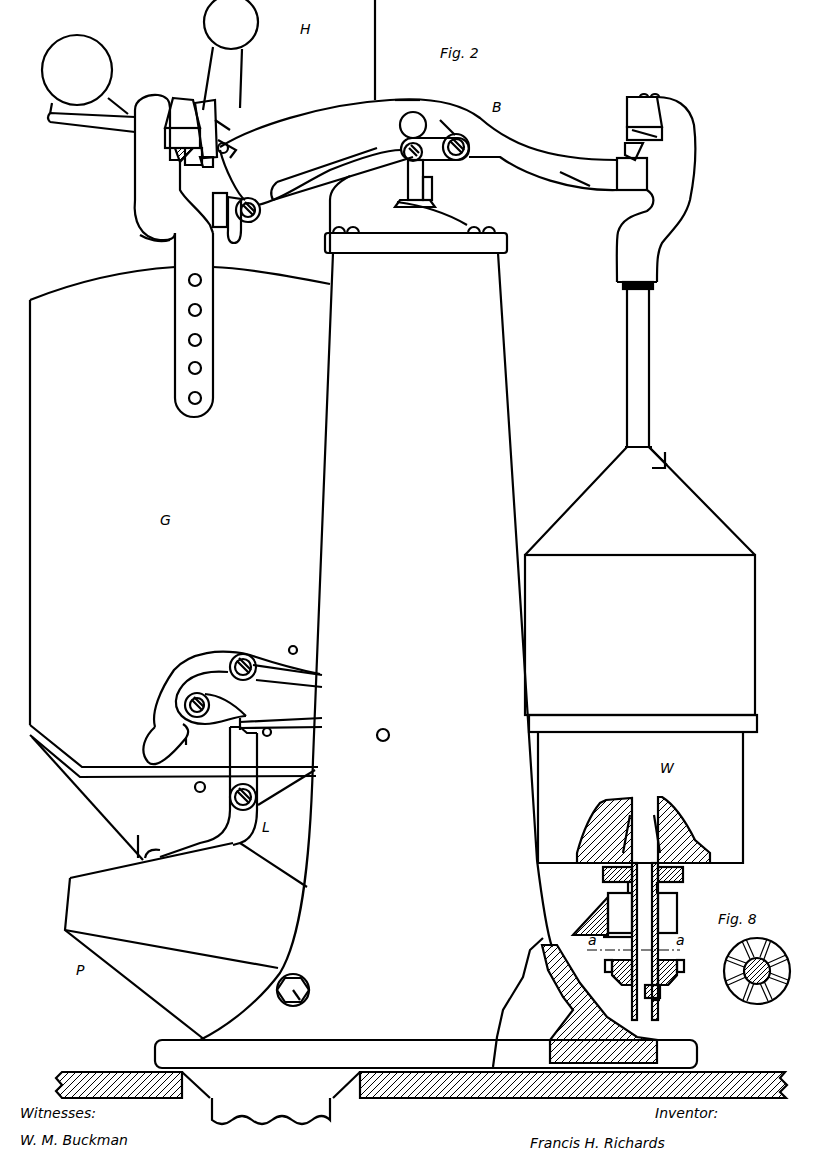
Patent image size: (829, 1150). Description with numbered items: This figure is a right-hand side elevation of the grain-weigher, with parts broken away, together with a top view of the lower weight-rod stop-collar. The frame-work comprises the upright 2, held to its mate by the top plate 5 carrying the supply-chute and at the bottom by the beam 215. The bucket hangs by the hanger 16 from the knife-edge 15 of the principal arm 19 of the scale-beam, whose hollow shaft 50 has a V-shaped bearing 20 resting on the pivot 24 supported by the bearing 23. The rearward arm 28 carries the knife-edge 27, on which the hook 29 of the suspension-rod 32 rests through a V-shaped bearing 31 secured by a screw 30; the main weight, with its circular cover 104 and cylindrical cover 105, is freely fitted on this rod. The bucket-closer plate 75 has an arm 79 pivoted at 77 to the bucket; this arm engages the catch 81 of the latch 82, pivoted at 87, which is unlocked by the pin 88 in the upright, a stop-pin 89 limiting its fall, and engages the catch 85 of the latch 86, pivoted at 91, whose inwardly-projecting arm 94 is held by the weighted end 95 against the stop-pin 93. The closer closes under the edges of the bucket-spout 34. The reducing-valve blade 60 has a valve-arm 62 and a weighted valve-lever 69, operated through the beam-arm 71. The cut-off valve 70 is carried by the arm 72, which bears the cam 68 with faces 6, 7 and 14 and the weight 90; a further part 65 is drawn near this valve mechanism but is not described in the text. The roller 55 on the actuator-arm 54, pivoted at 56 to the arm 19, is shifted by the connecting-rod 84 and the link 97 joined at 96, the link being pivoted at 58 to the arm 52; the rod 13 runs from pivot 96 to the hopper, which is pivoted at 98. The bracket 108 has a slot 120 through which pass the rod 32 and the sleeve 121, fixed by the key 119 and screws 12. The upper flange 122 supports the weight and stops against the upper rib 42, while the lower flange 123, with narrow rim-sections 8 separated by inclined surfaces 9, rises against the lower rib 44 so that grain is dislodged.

In FIG. 2, the side frame 2 is at (497, 402).
In FIG. 2, the top plate 5 is at (496, 245).
In FIG. 2, the cam-face part 6 is at (222, 128).
In FIG. 2, the cam-face part 7 is at (217, 157).
In FIG. 2, the rim-sections 8 is at (660, 962).
In FIG. 8, the rim-sections 8 is at (778, 947).
In FIG. 2, the inclined surfaces 9 is at (606, 975).
In FIG. 8, the inclined surfaces 9 is at (742, 998).
In FIG. 2, the screws 12 is at (663, 992).
In FIG. 2, the rod 13 is at (414, 217).
In FIG. 2, the cam-face part 14 is at (212, 150).
In FIG. 2, the pivot 15 is at (185, 152).
In FIG. 2, the hanger 16 is at (184, 290).
In FIG. 2, the principal arm 19 is at (418, 152).
In FIG. 2, the V-shaped bearing 20 is at (404, 143).
In FIG. 2, the bearing 23 is at (432, 192).
In FIG. 2, the pivot 24 is at (428, 172).
In FIG. 2, the pivot 27 is at (624, 150).
In FIG. 2, the arm 28 is at (545, 150).
In FIG. 2, the hook 29 is at (686, 127).
In FIG. 2, the screw 30 is at (645, 96).
In FIG. 2, the V-shaped bearing 31 is at (655, 130).
In FIG. 2, the suspension-rod 32 is at (640, 343).
In FIG. 2, the bucket-spout 34 is at (168, 840).
In FIG. 2, the upper rib 42 is at (578, 852).
In FIG. 2, the lower rib 44 is at (612, 942).
In FIG. 2, the hollow shaft 50 is at (420, 100).
In FIG. 2, the arm 52 is at (452, 130).
In FIG. 2, the actuator-arm 54 is at (230, 153).
In FIG. 2, the roller 55 is at (226, 145).
In FIG. 2, the pivot 56 is at (260, 215).
In FIG. 2, the pivot 58 is at (466, 145).
In FIG. 2, the valve-blade 60 is at (153, 230).
In FIG. 2, the valve-arm 62 is at (137, 205).
In FIG. 2, the block 65 is at (220, 232).
In FIG. 2, the cut-off-valve cam 68 is at (213, 112).
In FIG. 2, the valve-lever 69 is at (115, 100).
In FIG. 2, the cut-off valve 70 is at (243, 230).
In FIG. 2, the beam-arm 71 is at (77, 118).
In FIG. 2, the arm 72 is at (210, 62).
In FIG. 2, the closer plate 75 is at (205, 846).
In FIG. 2, the pivot 77 is at (258, 800).
In FIG. 2, the arm 79 is at (240, 760).
In FIG. 2, the catch 81 is at (234, 718).
In FIG. 2, the latch 82 is at (257, 716).
In FIG. 2, the connecting-rod 84 is at (352, 172).
In FIG. 2, the catch 85 is at (186, 742).
In FIG. 2, the latch 86 is at (180, 668).
In FIG. 2, the pivot 87 is at (202, 698).
In FIG. 2, the pin 88 is at (386, 741).
In FIG. 2, the stop-pin 89 is at (271, 735).
In FIG. 2, the weight 90 is at (231, 24).
In FIG. 2, the pivot 91 is at (246, 655).
In FIG. 2, the stop-pin 93 is at (292, 645).
In FIG. 2, the inwardly-projecting arm 94 is at (304, 668).
In FIG. 2, the weighted end 95 is at (155, 738).
In FIG. 2, the pivot 96 is at (435, 138).
In FIG. 2, the link 97 is at (422, 152).
In FIG. 2, the pivot 98 is at (302, 1000).
In FIG. 2, the circular cover 104 is at (745, 722).
In FIG. 2, the cylindrical cover 105 is at (740, 613).
In FIG. 2, the bracket 108 is at (590, 914).
In FIG. 2, the key 119 is at (658, 1003).
In FIG. 2, the slot 120 is at (660, 910).
In FIG. 2, the sleeve 121 is at (627, 913).
In FIG. 2, the flange 122 is at (684, 873).
In FIG. 2, the flange 123 is at (678, 978).
In FIG. 8, the flange 123 is at (744, 971).
In FIG. 2, the beam 215 is at (564, 990).